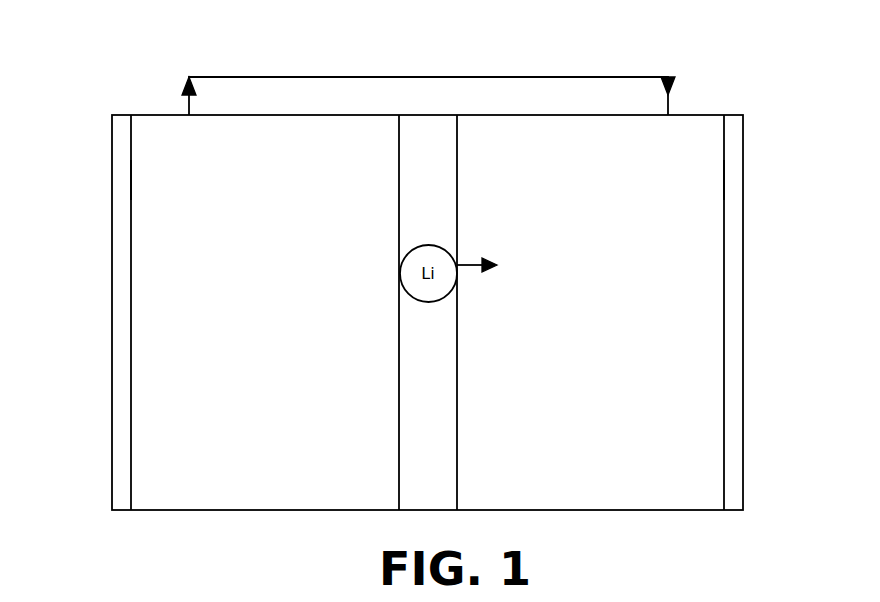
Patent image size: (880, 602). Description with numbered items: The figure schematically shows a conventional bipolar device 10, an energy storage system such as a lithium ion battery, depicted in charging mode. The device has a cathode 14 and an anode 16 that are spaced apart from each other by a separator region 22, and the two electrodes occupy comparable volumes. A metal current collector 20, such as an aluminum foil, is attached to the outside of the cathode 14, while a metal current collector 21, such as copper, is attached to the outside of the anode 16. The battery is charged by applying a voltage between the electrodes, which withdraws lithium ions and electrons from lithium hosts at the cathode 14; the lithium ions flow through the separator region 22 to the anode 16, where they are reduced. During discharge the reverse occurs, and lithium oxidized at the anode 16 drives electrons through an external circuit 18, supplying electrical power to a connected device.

The bipolar device 10 is at (790, 506).
The cathode 14 is at (140, 185).
The anode 16 is at (718, 184).
The external circuit 18 is at (408, 67).
The metal current collector 20 is at (111, 360).
The metal current collector 21 is at (745, 375).
The separator region 22 is at (428, 312).